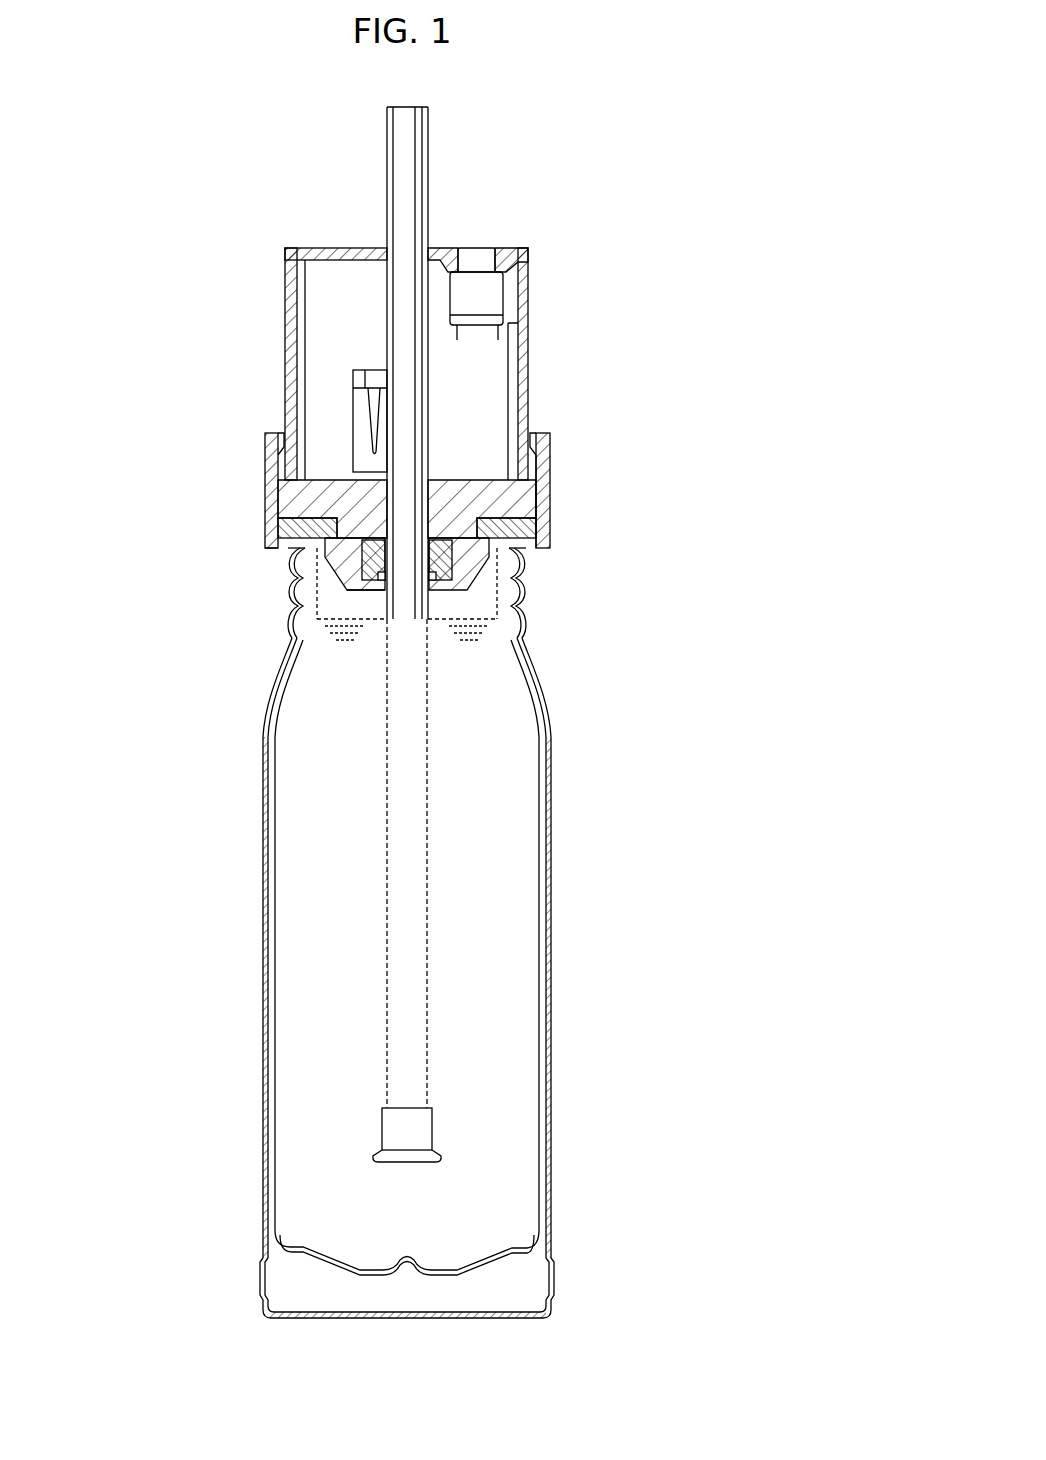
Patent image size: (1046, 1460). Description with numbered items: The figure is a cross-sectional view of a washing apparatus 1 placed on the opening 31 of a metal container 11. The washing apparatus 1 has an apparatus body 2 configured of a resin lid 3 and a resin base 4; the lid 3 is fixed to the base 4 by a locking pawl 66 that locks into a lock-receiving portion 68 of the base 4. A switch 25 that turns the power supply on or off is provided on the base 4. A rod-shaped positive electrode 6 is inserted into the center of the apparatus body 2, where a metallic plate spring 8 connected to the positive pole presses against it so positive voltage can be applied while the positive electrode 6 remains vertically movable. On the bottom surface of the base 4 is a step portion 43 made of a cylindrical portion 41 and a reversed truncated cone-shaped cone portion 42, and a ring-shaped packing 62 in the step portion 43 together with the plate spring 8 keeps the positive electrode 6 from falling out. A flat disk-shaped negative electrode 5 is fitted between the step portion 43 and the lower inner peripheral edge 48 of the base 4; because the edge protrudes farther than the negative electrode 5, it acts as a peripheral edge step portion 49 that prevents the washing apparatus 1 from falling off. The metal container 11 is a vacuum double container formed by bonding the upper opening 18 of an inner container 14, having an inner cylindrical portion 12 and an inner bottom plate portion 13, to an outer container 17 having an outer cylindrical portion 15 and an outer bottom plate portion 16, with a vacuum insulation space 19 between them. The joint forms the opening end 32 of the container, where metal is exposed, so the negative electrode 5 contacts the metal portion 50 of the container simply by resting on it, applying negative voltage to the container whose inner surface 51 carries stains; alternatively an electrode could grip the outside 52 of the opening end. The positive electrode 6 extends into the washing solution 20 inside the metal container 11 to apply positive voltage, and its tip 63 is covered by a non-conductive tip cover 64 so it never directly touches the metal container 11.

The washing apparatus 1 is at (568, 225).
The apparatus body 2 is at (538, 348).
The lid 3 is at (528, 287).
The base 4 is at (550, 525).
The negative electrode 5 is at (283, 500).
The positive electrode 6 is at (412, 155).
The plate spring 8 is at (355, 400).
The metal container 11 is at (603, 637).
The inner cylindrical portion 12 is at (540, 655).
The inner bottom plate portion 13 is at (467, 1262).
The inner container 14 is at (273, 670).
The outer cylindrical portion 15 is at (542, 668).
The outer bottom plate portion 16 is at (290, 1318).
The outer container 17 is at (300, 608).
The upper opening 18 is at (527, 580).
The vacuum insulation space 19 is at (552, 845).
The washing solution 20 is at (483, 972).
The switch 25 is at (478, 258).
The opening 31 is at (523, 562).
The opening end of the container 32 is at (268, 523).
The cylindrical portion 41 is at (330, 560).
The cone portion 42 is at (383, 573).
The step portion 43 is at (348, 588).
The lower inner peripheral edge 48 is at (297, 551).
The peripheral edge step portion 49 is at (280, 549).
The metal portion of the container 50 is at (283, 648).
The inner surface 51 is at (283, 940).
The outside of the opening end 52 is at (527, 573).
The packing 62 is at (523, 587).
The tip 63 is at (437, 1118).
The tip cover 64 is at (420, 1140).
The locking pawl 66 is at (553, 453).
The lock-receiving portion 68 is at (552, 475).